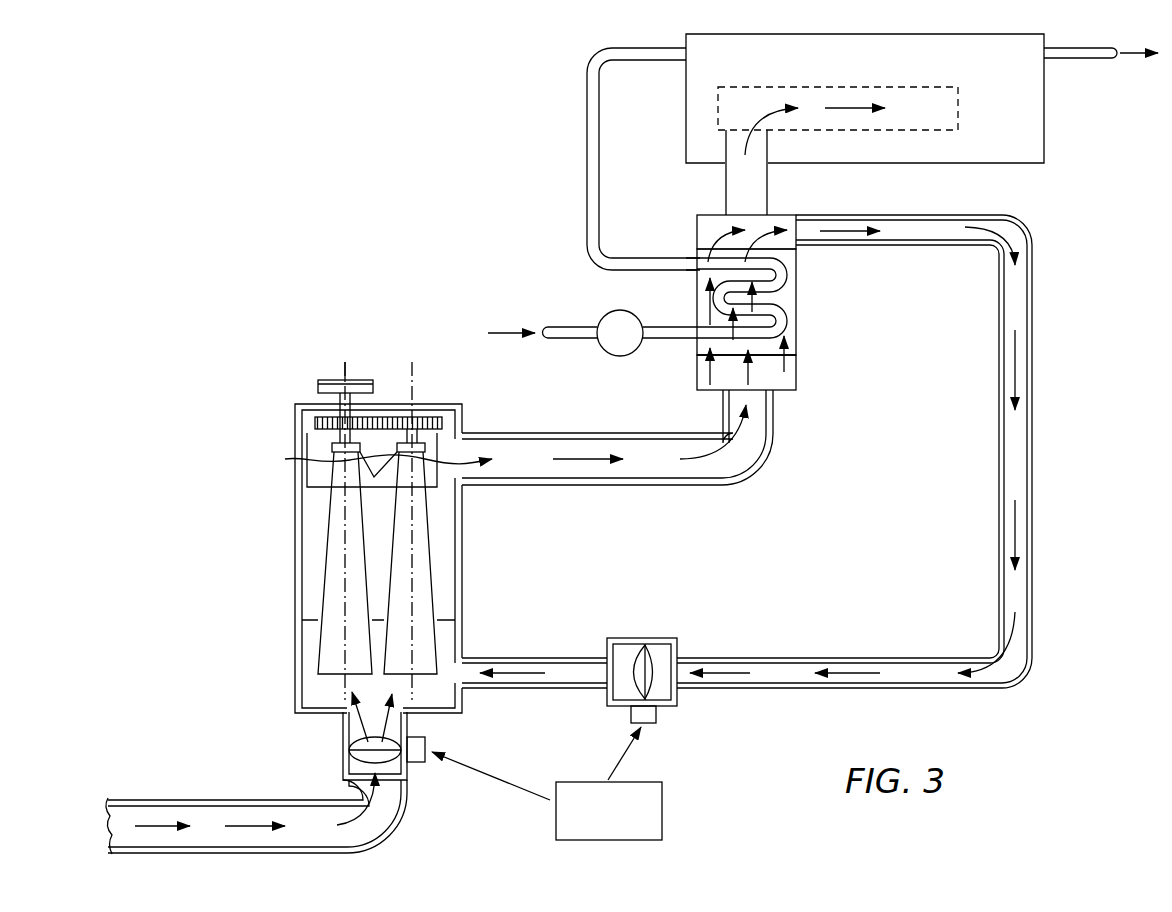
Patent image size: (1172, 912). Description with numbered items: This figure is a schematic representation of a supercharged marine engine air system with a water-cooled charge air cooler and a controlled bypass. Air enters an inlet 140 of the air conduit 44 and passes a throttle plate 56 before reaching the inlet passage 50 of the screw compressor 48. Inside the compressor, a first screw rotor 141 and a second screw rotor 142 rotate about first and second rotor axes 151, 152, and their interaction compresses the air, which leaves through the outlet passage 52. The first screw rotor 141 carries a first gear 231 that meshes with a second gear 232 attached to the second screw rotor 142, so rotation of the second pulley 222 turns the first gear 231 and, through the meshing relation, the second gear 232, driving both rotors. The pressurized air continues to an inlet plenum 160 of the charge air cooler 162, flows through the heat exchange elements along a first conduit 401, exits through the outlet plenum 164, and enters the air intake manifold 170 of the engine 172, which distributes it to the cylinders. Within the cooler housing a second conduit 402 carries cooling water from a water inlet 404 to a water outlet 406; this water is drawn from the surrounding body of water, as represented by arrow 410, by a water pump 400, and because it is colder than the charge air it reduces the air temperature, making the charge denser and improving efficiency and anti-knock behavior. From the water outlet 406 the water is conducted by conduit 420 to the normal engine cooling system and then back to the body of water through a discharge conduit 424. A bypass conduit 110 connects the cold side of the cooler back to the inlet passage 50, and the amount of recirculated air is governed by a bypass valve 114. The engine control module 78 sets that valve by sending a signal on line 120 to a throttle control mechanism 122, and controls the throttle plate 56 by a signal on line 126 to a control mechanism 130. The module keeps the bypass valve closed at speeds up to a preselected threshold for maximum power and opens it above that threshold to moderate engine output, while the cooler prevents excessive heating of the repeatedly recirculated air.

The air conduit 44 is at (762, 190).
The screw compressor 48 is at (462, 560).
The inlet passage 50 is at (310, 700).
The outlet passage 52 is at (373, 460).
The throttle plate 56 is at (348, 752).
The engine control module 78 is at (664, 812).
The bypass conduit 110 is at (1013, 462).
The bypass valve 114 is at (651, 660).
The signal line 120 is at (620, 758).
The throttle control mechanism 122 is at (657, 712).
The signal line 126 is at (491, 791).
The control mechanism 130 is at (427, 748).
The inlet 140 is at (110, 824).
The first screw rotor 141 is at (322, 548).
The second screw rotor 142 is at (428, 532).
The first rotor axis 151 is at (345, 598).
The second rotor axis 152 is at (432, 596).
The inlet plenum 160 is at (790, 377).
The charge air cooler 162 is at (790, 297).
The outlet plenum 164 is at (707, 235).
The air intake manifold 170 is at (828, 87).
The engine 172 is at (943, 153).
The second pulley 222 is at (360, 378).
The first gear 231 is at (318, 422).
The second gear 232 is at (425, 415).
The water pump 400 is at (612, 312).
The first conduit 401 is at (696, 350).
The second conduit 402 is at (786, 320).
The water inlet 404 is at (697, 327).
The water outlet 406 is at (697, 271).
The water flow arrow 410 is at (496, 328).
The conduit 420 is at (640, 60).
The discharge conduit 424 is at (1072, 58).